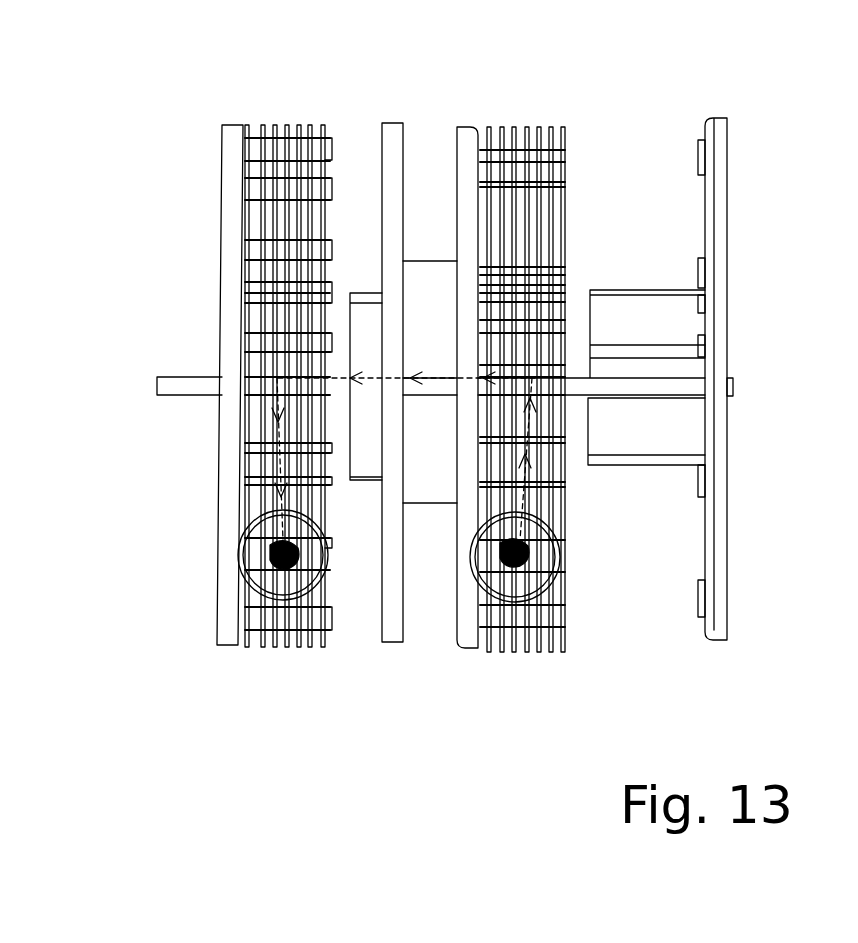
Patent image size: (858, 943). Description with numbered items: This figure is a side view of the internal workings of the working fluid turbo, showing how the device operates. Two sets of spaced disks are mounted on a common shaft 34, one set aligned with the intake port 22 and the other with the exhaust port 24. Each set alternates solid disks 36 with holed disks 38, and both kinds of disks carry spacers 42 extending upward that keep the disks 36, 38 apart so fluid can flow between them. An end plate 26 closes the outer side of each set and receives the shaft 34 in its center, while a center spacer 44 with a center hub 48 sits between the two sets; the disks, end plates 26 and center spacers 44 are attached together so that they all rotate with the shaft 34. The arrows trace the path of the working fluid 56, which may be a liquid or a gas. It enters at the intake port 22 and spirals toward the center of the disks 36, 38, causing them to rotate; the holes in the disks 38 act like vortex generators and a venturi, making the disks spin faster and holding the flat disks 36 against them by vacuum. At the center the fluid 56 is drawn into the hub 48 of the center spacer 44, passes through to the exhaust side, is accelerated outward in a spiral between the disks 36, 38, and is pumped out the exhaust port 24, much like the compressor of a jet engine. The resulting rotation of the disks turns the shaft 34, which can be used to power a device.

The intake port 22 is at (560, 567).
The exhaust port 24 is at (243, 548).
The end plate 26 is at (230, 133).
The shaft 34 is at (157, 395).
The solid disks 36 is at (552, 130).
The holed disks 38 is at (563, 128).
The spacers 42 is at (507, 130).
The center spacer 44 is at (446, 82).
The center hub 48 is at (642, 292).
The working fluid 56 is at (432, 375).